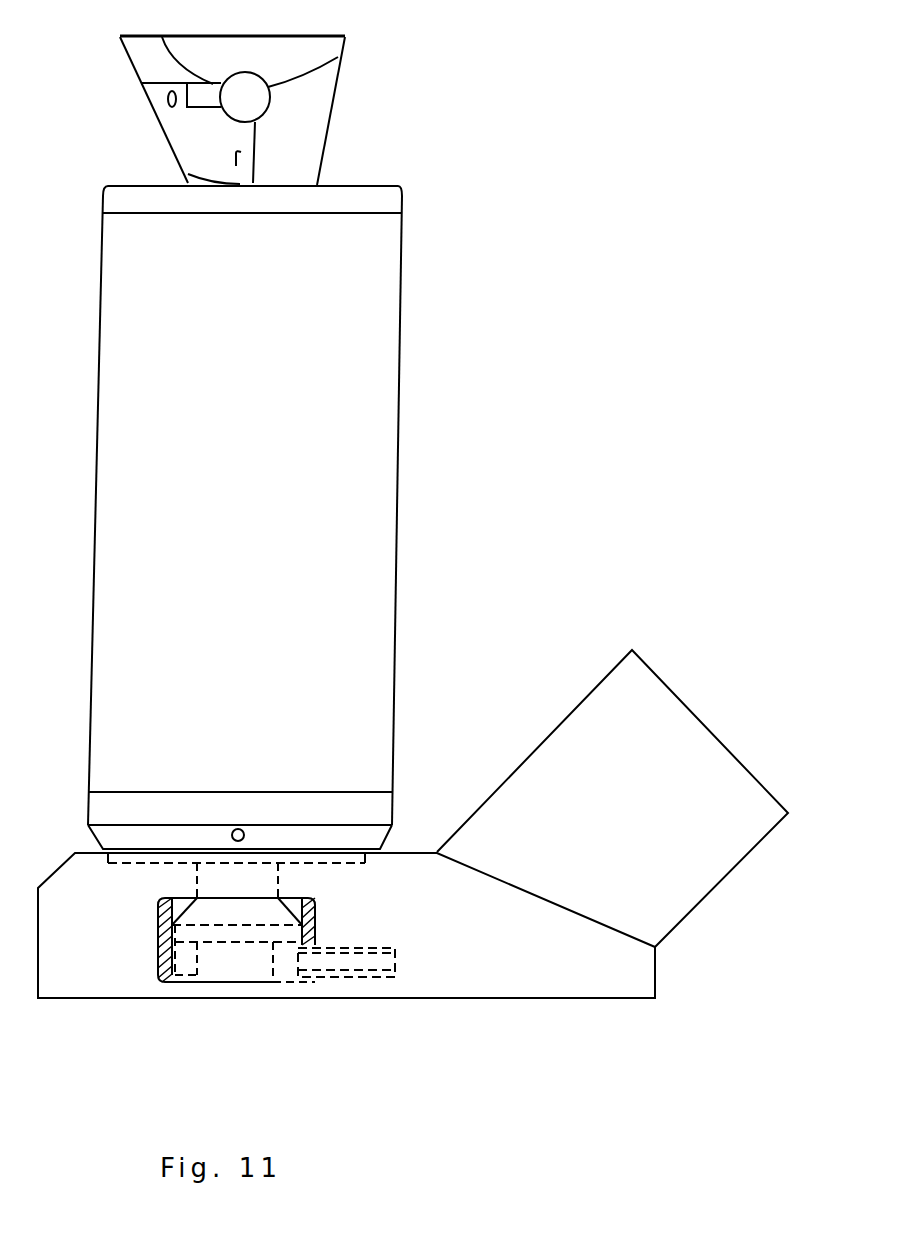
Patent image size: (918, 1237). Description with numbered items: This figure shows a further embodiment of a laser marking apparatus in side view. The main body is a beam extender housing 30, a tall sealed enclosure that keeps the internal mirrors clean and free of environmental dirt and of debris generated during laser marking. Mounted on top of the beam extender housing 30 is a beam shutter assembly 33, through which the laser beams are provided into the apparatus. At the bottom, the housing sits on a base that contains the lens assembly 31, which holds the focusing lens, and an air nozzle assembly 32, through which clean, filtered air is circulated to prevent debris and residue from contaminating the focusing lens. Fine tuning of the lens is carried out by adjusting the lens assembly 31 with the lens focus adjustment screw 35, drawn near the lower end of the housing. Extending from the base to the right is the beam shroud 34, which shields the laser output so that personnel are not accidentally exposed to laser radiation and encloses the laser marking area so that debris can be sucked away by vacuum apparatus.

The beam extender housing 30 is at (297, 382).
The lens assembly 31 is at (242, 880).
The air nozzle assembly 32 is at (322, 947).
The beam shutter assembly 33 is at (300, 122).
The beam shroud 34 is at (477, 855).
The lens focus adjustment screw 35 is at (245, 820).